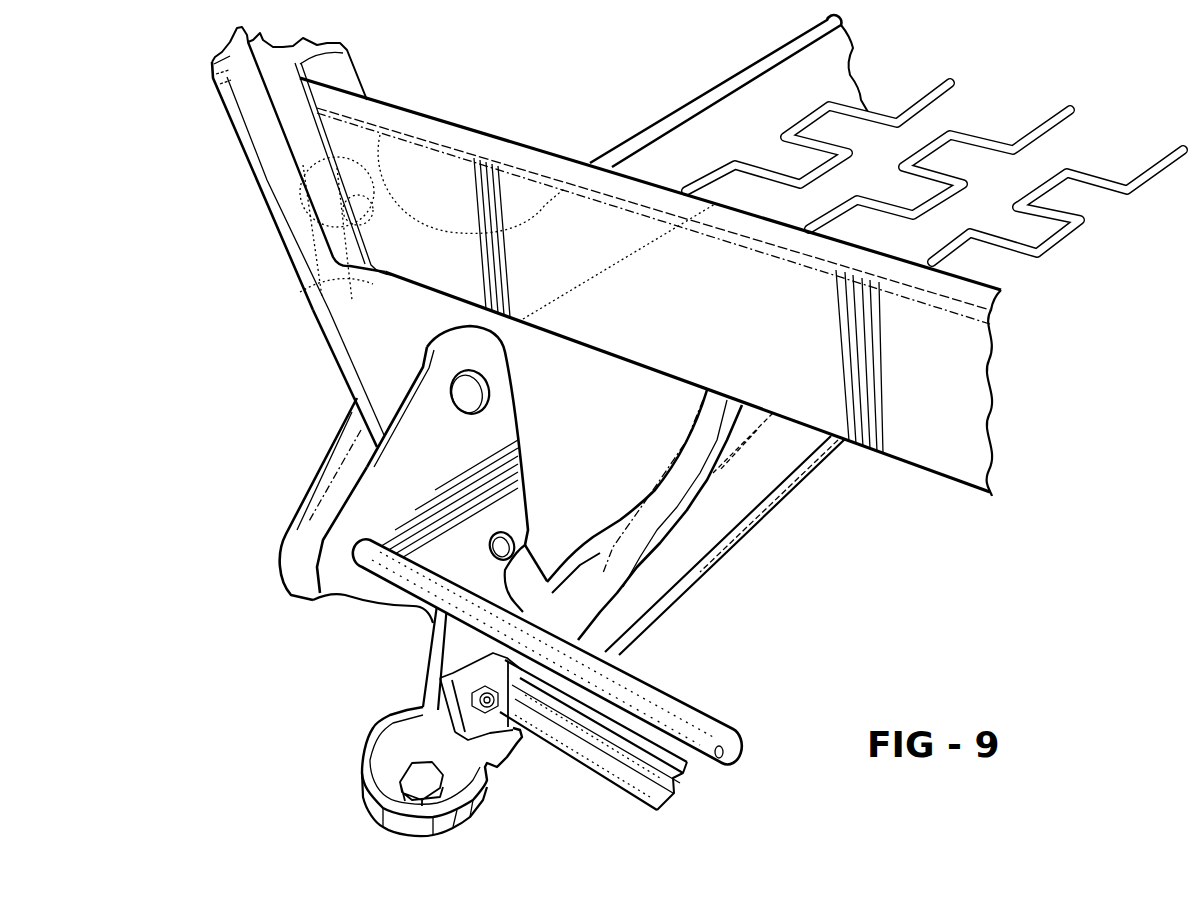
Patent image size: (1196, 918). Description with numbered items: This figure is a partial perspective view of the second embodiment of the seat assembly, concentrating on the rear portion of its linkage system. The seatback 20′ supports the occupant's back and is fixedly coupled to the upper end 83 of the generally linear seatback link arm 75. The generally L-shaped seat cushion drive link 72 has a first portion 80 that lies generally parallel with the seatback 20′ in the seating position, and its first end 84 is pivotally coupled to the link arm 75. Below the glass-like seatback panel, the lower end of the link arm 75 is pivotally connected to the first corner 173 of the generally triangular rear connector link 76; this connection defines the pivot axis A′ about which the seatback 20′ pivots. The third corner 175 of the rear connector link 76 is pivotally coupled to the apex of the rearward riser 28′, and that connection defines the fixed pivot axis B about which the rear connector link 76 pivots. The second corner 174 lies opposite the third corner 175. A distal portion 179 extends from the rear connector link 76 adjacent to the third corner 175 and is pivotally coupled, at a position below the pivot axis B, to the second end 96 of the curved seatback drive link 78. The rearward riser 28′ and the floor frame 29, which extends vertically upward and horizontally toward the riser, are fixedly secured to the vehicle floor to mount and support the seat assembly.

The seatback 20′ is at (917, 440).
The seat cushion drive link 72 is at (687, 112).
The upper end 83 is at (212, 62).
The first end 84 is at (288, 232).
The first portion 80 is at (310, 305).
The seatback link arm 75 is at (377, 368).
The rear connector link 76 is at (365, 465).
The second corner 174 is at (352, 597).
The distal portion 179 is at (437, 660).
The second end 96 is at (527, 728).
The first corner 173 is at (478, 351).
The pivot axis A′ is at (475, 395).
The third corner 175 is at (505, 503).
The fixed pivot axis B is at (503, 546).
The rearward riser 28′ is at (547, 577).
The seatback drive link 78 is at (697, 498).
The floor frame 29 is at (813, 455).